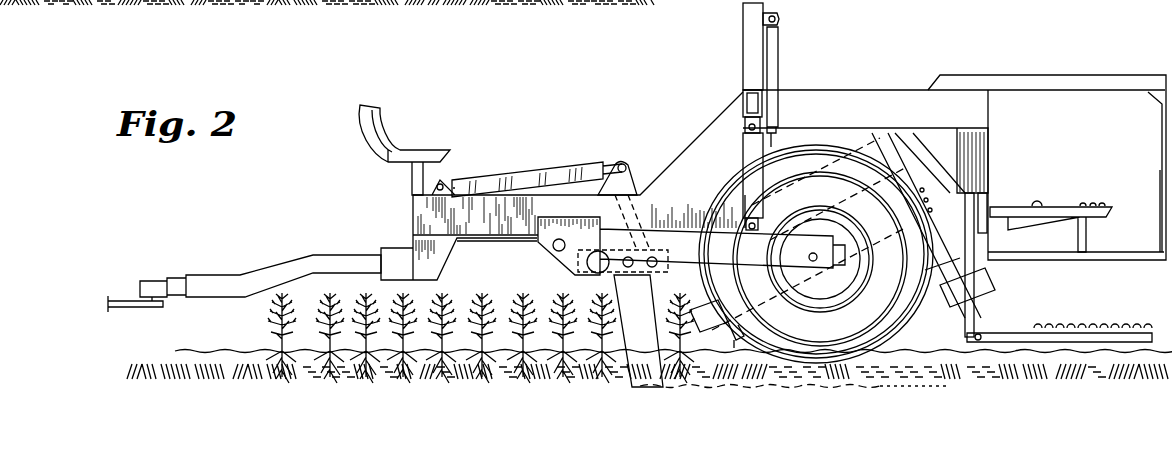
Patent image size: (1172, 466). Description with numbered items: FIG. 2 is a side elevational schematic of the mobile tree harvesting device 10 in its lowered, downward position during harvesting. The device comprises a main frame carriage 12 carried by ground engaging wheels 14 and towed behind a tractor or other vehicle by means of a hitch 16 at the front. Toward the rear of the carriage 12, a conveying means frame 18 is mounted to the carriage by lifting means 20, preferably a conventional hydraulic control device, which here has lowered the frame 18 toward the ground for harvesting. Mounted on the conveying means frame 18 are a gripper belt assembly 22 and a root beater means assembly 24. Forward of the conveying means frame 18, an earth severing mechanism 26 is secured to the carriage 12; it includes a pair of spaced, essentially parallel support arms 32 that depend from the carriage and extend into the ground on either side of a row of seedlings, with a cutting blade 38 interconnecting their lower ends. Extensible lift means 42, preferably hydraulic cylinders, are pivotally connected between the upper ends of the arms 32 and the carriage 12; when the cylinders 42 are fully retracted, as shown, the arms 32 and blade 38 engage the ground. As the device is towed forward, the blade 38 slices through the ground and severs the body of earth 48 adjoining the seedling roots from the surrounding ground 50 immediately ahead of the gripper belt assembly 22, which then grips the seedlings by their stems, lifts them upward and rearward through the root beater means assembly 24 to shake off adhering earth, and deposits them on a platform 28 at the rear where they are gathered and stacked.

The mobile tree harvesting device 10 is at (638, 134).
The main frame carriage 12 is at (457, 203).
The ground engaging wheels 14 is at (890, 343).
The hitch 16 is at (215, 272).
The conveying means frame 18 is at (849, 135).
The lifting means 20 is at (759, 70).
The gripper belt assembly 22 is at (699, 314).
The root beater means assembly 24 is at (938, 307).
The earth severing mechanism 26 is at (627, 163).
The platform 28 is at (1058, 207).
The support arms 32 is at (636, 186).
The cutting blade 38 is at (631, 389).
The extensible lift means 42 is at (510, 178).
The body of earth adjoining the roots 48 is at (740, 389).
The surrounding ground 50 is at (247, 354).